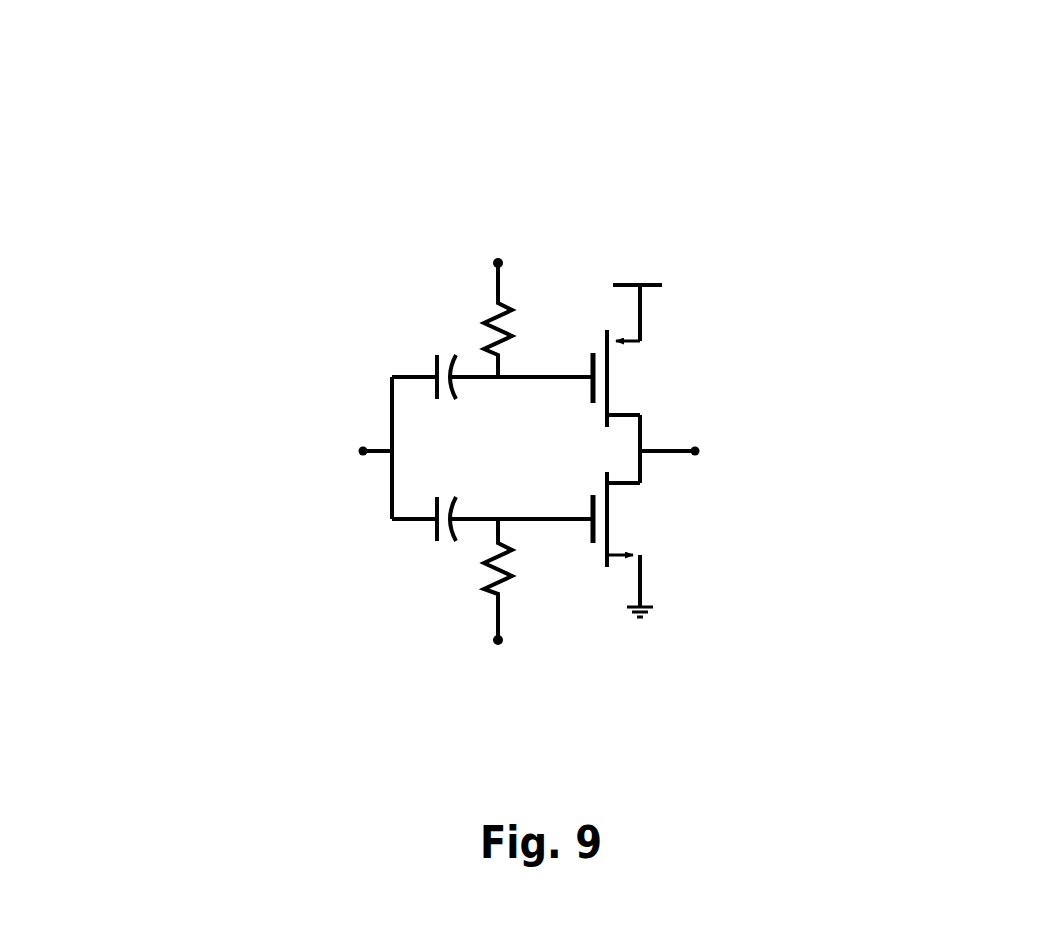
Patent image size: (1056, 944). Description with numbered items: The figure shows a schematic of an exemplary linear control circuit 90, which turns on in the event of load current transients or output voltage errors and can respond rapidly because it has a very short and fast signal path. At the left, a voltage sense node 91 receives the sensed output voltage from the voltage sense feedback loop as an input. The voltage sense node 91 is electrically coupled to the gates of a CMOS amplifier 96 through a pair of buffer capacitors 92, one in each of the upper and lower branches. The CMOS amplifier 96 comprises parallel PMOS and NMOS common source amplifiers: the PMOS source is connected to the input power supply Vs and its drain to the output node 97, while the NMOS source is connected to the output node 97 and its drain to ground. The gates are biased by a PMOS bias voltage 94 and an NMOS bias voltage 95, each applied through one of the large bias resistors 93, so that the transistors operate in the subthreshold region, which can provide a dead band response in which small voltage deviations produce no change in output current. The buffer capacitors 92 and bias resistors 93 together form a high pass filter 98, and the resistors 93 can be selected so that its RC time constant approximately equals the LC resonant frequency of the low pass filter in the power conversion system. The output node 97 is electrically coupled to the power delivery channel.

The linear control circuit 90 is at (943, 137).
The voltage sense node 91 is at (333, 473).
The buffer capacitors 92 is at (405, 369).
The bias resistors 93 is at (463, 323).
The PMOS bias voltage 94 is at (515, 220).
The NMOS bias voltage 95 is at (502, 672).
The CMOS amplifier 96 is at (697, 350).
The output node 97 is at (728, 498).
The high pass filter 98 is at (373, 270).